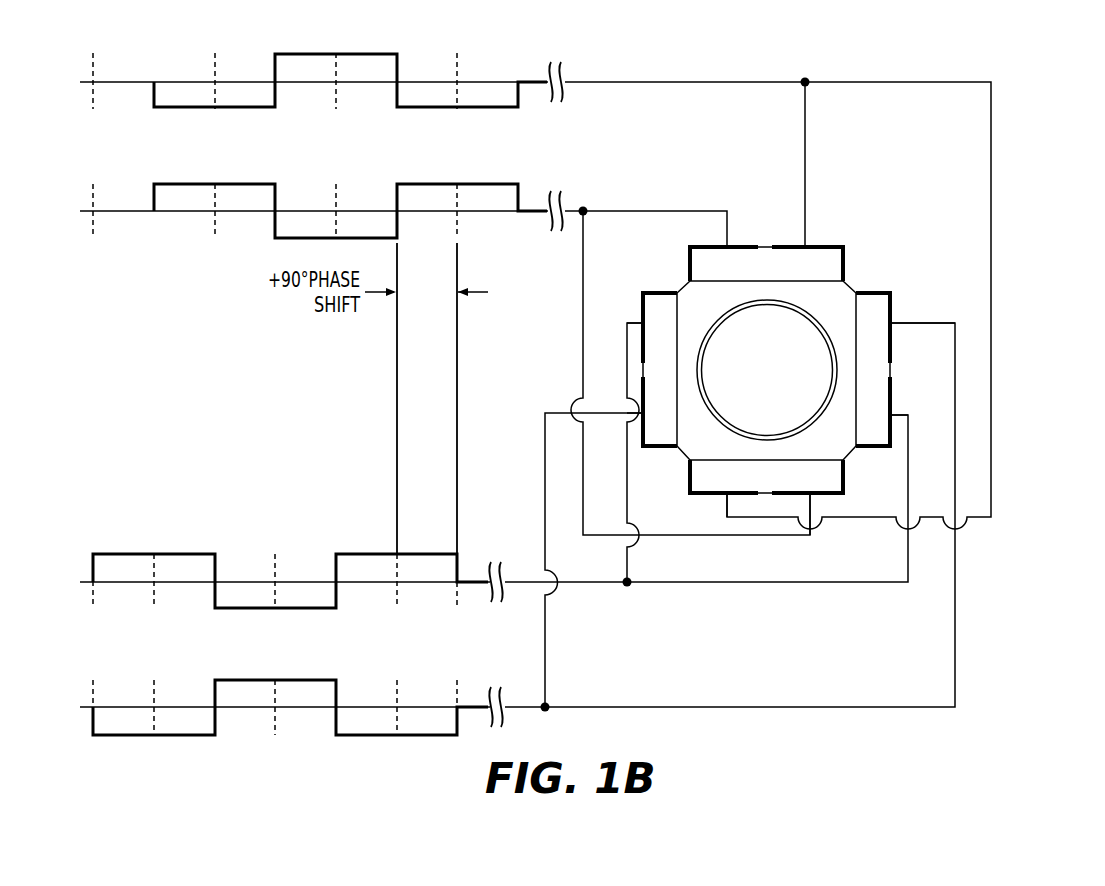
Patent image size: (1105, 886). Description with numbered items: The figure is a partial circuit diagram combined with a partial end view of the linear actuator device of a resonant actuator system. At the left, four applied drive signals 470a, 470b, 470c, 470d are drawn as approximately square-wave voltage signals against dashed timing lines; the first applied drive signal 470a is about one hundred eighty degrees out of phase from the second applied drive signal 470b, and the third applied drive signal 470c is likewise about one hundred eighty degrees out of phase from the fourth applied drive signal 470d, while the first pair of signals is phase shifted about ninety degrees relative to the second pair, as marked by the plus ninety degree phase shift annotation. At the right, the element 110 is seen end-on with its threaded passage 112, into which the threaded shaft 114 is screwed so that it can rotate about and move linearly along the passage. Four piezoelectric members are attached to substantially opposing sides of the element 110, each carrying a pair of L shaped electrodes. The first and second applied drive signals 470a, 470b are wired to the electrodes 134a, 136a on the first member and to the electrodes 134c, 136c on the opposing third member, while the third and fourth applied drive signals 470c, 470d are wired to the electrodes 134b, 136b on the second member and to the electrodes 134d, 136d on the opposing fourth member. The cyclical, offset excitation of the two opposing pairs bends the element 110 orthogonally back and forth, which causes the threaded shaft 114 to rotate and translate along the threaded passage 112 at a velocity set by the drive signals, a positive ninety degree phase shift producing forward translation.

The first applied drive signal 470a is at (313, 54).
The second applied drive signal 470b is at (428, 184).
The third applied drive signal 470c is at (113, 554).
The fourth applied drive signal 470d is at (113, 735).
The element 110 is at (848, 340).
The threaded passage 112 is at (709, 335).
The threaded shaft 114 is at (767, 370).
The L shaped electrode 134a is at (827, 246).
The L shaped electrode 134b is at (893, 430).
The L shaped electrode 134c is at (826, 496).
The L shaped electrode 134d is at (642, 387).
The L shaped electrode 136a is at (740, 246).
The L shaped electrode 136b is at (893, 300).
The L shaped electrode 136c is at (708, 496).
The L shaped electrode 136d is at (642, 309).